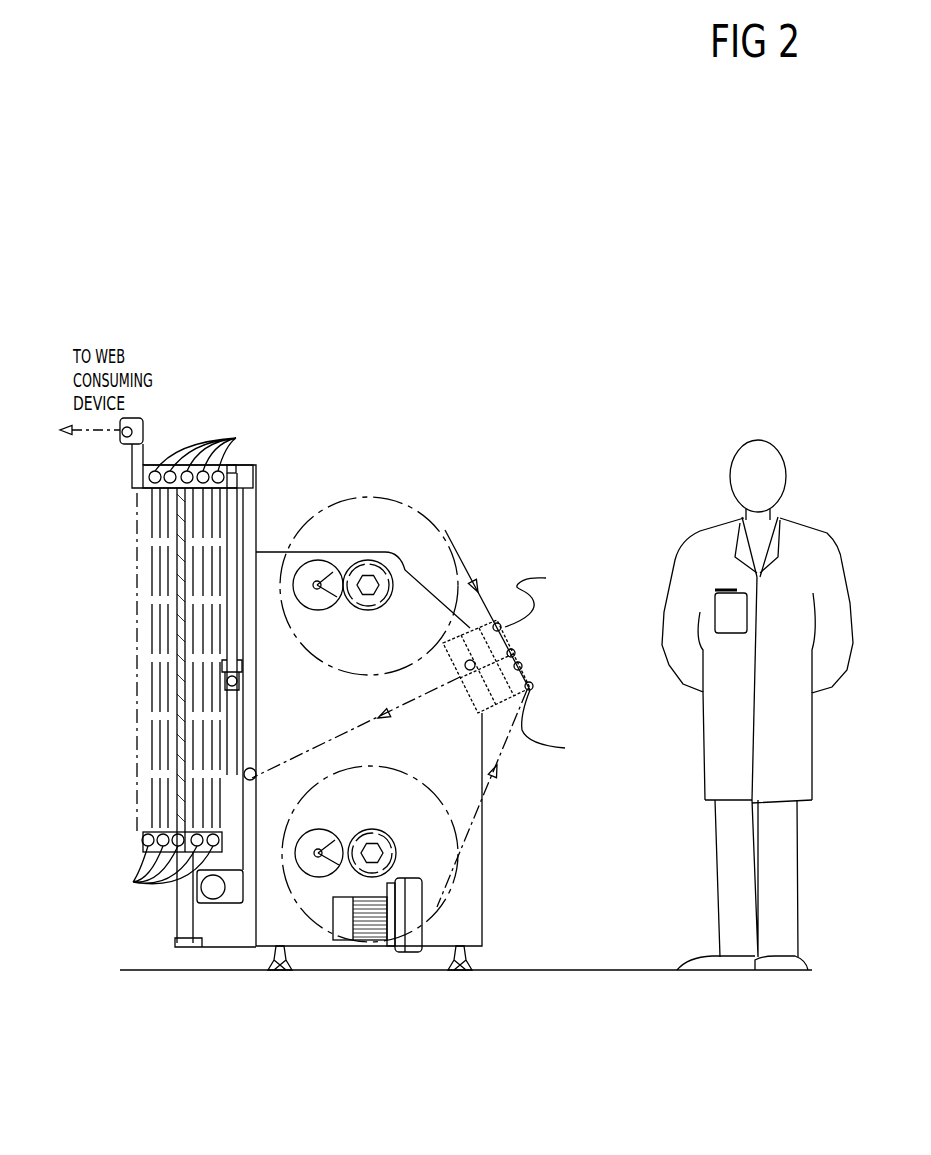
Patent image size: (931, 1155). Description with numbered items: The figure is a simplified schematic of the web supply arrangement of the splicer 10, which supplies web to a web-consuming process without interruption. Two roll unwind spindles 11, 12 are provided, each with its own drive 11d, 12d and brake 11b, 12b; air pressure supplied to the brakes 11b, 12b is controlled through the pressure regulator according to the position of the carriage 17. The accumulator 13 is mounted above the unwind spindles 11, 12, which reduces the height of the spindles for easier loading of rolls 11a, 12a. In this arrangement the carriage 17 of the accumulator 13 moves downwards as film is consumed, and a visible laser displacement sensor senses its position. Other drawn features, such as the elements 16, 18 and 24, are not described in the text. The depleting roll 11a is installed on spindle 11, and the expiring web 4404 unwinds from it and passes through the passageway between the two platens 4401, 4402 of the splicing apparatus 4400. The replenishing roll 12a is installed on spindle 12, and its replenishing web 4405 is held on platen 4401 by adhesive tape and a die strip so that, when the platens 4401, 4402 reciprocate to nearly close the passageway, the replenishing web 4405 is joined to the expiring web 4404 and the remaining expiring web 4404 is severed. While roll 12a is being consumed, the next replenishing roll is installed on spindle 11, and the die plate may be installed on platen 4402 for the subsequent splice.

The splicer 10 is at (374, 410).
The roll unwind spindle 11 is at (368, 560).
The depleting roll 11a is at (367, 497).
The brake 11b is at (396, 584).
The drive 11d is at (318, 560).
The roll unwind spindle 12 is at (372, 829).
The replenishing roll 12a is at (440, 910).
The brake 12b is at (398, 853).
The drive 12d is at (319, 829).
The accumulator 13 is at (130, 655).
The tubes 16 is at (184, 658).
The carriage 17 is at (143, 840).
The web path line 18 is at (138, 528).
The motor 24 is at (410, 945).
The splicing apparatus 4400 is at (550, 638).
The platen 4401 is at (532, 672).
The platen 4402 is at (546, 578).
The expiring web 4404 is at (470, 572).
The replenishing web 4405 is at (564, 724).